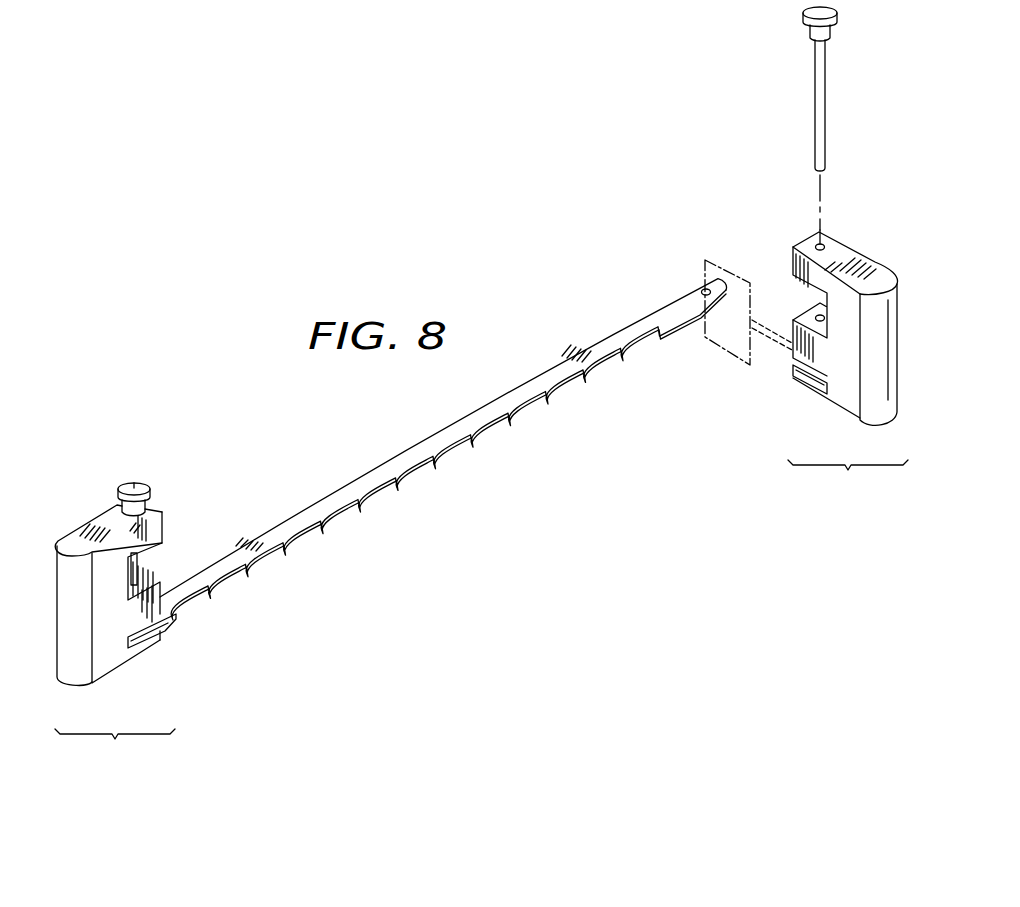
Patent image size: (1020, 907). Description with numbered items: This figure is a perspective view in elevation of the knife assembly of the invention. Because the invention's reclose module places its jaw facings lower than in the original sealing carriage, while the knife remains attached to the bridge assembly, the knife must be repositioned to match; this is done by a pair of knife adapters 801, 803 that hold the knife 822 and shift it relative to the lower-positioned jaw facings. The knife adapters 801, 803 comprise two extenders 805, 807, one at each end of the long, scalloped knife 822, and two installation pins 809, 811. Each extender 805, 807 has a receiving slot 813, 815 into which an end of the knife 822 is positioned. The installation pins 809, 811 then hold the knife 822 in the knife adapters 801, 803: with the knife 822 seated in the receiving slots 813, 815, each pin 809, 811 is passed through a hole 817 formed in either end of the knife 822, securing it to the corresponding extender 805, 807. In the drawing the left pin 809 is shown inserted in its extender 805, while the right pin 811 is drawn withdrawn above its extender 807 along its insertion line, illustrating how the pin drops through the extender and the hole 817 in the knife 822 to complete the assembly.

The knife adapter 801 is at (130, 604).
The knife adapter 803 is at (828, 259).
The extender 805 is at (108, 653).
The extender 807 is at (835, 392).
The installation pin 809 is at (131, 486).
The installation pin 811 is at (826, 98).
The receiving slot 813 is at (139, 641).
The receiving slot 815 is at (815, 385).
The hole 817 is at (703, 290).
The knife 822 is at (487, 433).